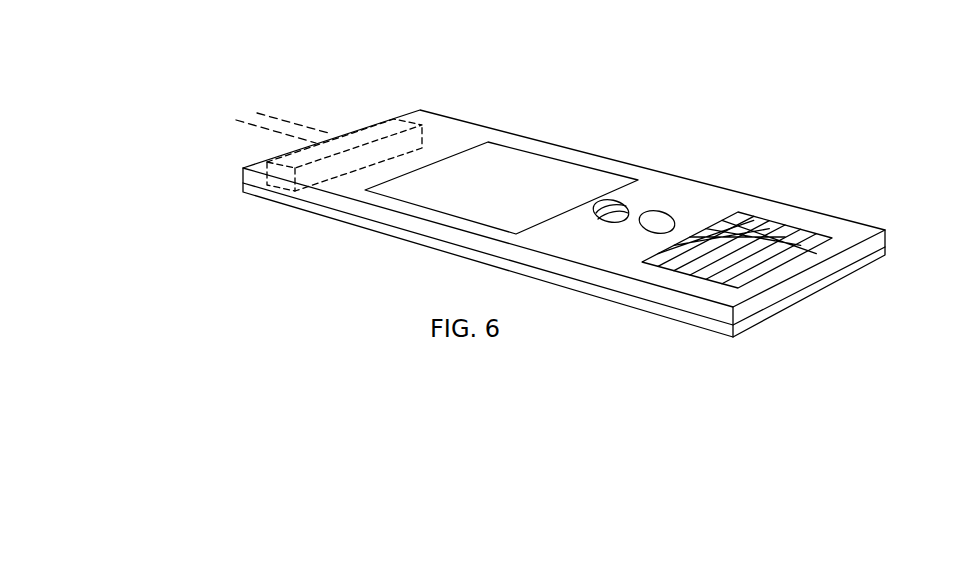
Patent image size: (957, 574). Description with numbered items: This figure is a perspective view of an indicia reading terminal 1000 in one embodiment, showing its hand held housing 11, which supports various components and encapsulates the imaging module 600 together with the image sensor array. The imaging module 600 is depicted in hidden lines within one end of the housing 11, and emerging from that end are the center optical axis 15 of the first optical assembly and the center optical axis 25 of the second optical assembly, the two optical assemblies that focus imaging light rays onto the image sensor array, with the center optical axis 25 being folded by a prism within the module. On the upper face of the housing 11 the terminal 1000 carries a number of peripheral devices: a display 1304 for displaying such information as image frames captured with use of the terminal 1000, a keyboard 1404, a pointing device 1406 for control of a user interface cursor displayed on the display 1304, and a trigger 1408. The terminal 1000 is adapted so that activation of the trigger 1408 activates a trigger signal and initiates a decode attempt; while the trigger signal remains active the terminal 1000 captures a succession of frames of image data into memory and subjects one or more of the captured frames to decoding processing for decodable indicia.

The indicia reading terminal 1000 is at (500, 81).
The hand held housing 11 is at (857, 232).
The center optical axis 15 is at (262, 128).
The center optical axis 25 is at (282, 120).
The imaging module 600 is at (380, 130).
The display 1304 is at (567, 158).
The keyboard 1404 is at (773, 222).
The pointing device 1406 is at (620, 202).
The trigger 1408 is at (675, 220).